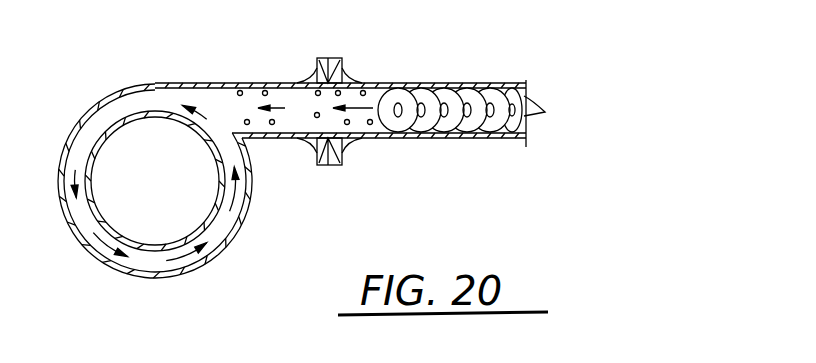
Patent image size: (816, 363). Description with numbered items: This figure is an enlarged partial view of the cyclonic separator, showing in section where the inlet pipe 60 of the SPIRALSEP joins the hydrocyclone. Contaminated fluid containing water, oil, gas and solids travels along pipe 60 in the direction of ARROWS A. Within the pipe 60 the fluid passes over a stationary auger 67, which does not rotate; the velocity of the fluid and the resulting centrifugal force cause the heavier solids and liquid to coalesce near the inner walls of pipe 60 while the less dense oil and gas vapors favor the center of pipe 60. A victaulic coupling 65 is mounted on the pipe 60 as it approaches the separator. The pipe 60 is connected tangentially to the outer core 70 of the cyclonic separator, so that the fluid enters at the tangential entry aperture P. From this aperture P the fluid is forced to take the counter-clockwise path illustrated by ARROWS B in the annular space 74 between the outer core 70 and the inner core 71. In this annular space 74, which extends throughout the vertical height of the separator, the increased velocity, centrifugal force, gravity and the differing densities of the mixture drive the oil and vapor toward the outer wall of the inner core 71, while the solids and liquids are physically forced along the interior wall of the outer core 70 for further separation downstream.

The pipe 60 is at (273, 83).
The victaulic coupling 65 is at (340, 58).
The stationary auger 67 is at (407, 85).
The outer core 70 is at (78, 123).
The inner core 71 is at (118, 120).
The annular space 74 is at (217, 223).
The tangential entry aperture P is at (210, 100).
The flow direction arrows A is at (315, 108).
The counter-clockwise flow arrows B is at (121, 196).